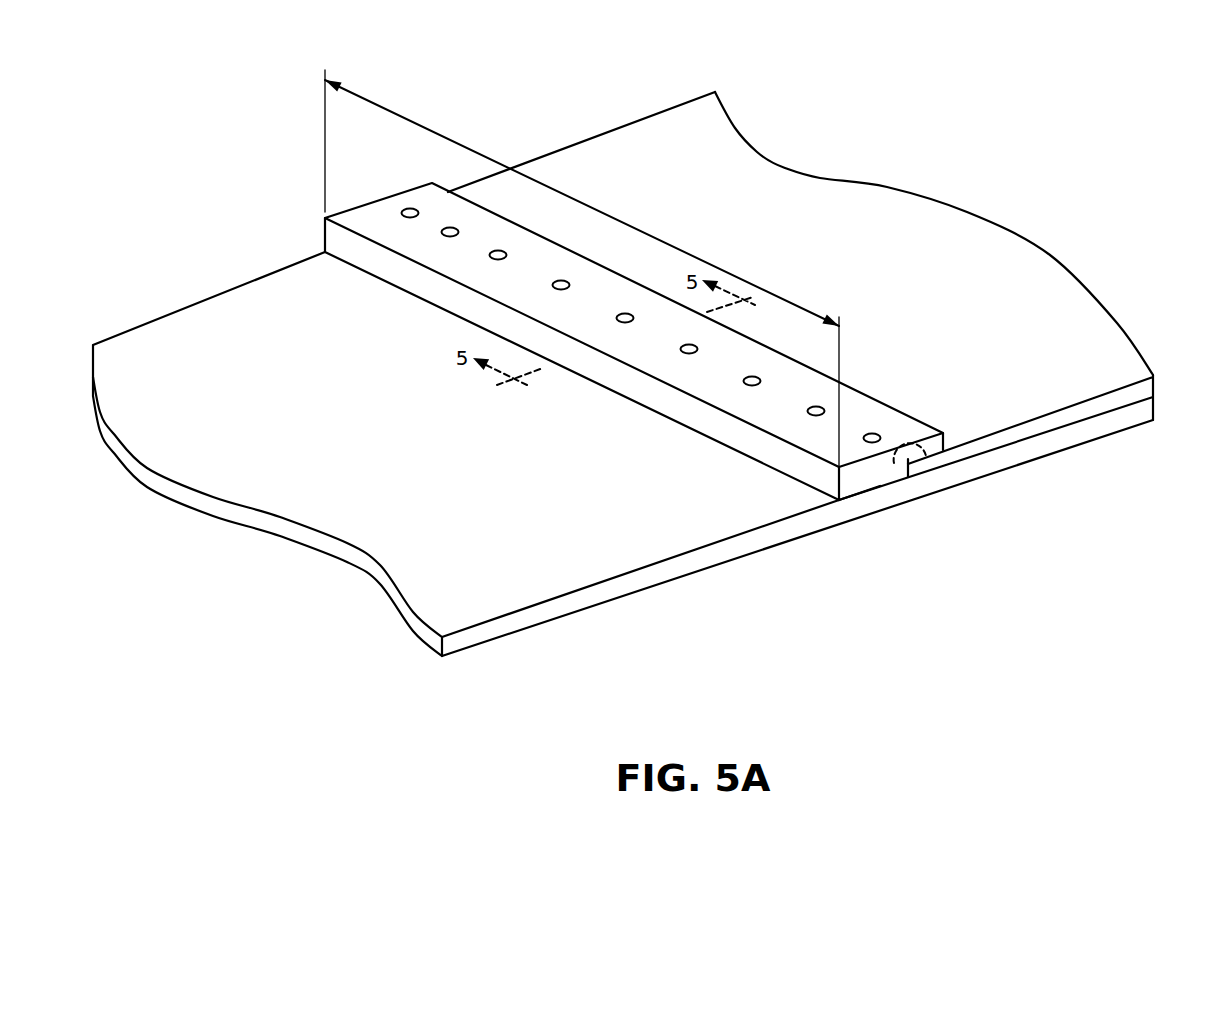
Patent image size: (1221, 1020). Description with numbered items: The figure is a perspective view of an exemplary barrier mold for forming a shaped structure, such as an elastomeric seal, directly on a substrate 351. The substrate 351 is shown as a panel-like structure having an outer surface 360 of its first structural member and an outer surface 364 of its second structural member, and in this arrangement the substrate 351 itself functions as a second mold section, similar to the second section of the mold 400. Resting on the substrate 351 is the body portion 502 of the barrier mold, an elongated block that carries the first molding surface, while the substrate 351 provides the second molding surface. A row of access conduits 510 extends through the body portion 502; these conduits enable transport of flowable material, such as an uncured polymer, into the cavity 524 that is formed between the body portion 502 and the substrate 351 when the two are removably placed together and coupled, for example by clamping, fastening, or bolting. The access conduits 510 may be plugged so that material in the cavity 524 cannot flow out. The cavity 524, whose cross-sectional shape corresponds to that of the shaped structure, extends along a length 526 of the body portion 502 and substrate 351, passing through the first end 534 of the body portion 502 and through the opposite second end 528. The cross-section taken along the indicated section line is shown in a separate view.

The substrate 351 is at (1160, 375).
The outer surface 360 is at (287, 357).
The outer surface 364 is at (720, 207).
The mold 400 is at (307, 171).
The body portion 502 is at (473, 215).
The access conduits 510 is at (563, 281).
The cavity 524 is at (890, 483).
The length 526 is at (585, 203).
The second end 528 is at (634, 322).
The first end 534 is at (847, 512).